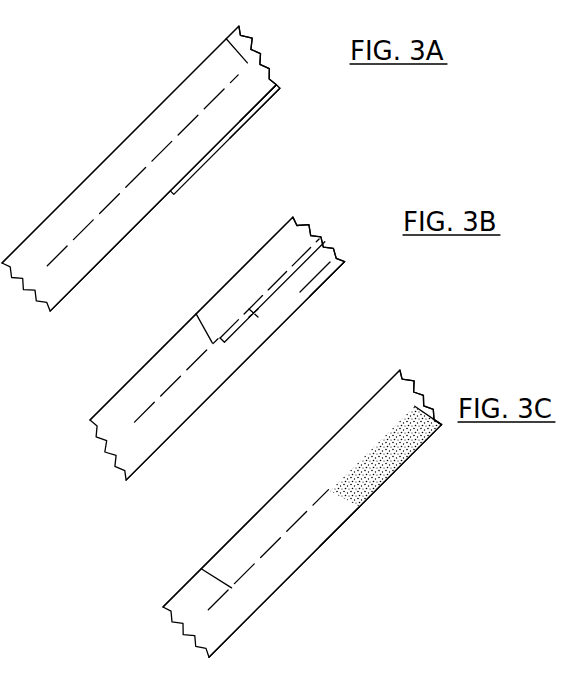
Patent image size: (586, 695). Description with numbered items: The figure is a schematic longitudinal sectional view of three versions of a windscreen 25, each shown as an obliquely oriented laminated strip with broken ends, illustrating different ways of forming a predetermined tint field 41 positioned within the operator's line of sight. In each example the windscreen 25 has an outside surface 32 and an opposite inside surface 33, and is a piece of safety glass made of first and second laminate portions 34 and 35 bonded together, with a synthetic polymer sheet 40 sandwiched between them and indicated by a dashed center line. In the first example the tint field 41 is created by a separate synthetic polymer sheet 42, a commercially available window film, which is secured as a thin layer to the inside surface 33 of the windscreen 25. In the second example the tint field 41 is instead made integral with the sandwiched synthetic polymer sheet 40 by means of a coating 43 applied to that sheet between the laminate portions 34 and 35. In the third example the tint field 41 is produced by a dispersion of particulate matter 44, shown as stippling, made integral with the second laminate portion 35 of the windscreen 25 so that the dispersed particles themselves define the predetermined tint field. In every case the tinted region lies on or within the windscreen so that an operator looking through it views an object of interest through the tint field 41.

In FIG. 3A, the windscreen 25 is at (95, 146).
In FIG. 3B, the windscreen 25 is at (264, 243).
In FIG. 3C, the windscreen 25 is at (313, 447).
In FIG. 3A, the outside surface 32 is at (68, 193).
In FIG. 3B, the outside surface 32 is at (140, 367).
In FIG. 3C, the outside surface 32 is at (243, 525).
In FIG. 3A, the inside surface 33 is at (98, 262).
In FIG. 3B, the inside surface 33 is at (178, 428).
In FIG. 3C, the inside surface 33 is at (235, 632).
In FIG. 3A, the first laminate portion 34 is at (177, 98).
In FIG. 3B, the first laminate portion 34 is at (293, 217).
In FIG. 3C, the first laminate portion 34 is at (402, 388).
In FIG. 3A, the second laminate portion 35 is at (260, 77).
In FIG. 3B, the second laminate portion 35 is at (330, 250).
In FIG. 3C, the second laminate portion 35 is at (330, 513).
In FIG. 3A, the synthetic polymer sheet 40 is at (222, 36).
In FIG. 3B, the synthetic polymer sheet 40 is at (196, 314).
In FIG. 3C, the synthetic polymer sheet 40 is at (198, 567).
In FIG. 3A, the predetermined tint field 41 is at (268, 117).
In FIG. 3B, the predetermined tint field 41 is at (304, 282).
In FIG. 3C, the predetermined tint field 41 is at (408, 440).
In FIG. 3A, the synthetic polymer sheet 42 is at (200, 170).
In FIG. 3B, the coating 43 is at (272, 334).
In FIG. 3C, the adhesive coating 44 is at (382, 468).